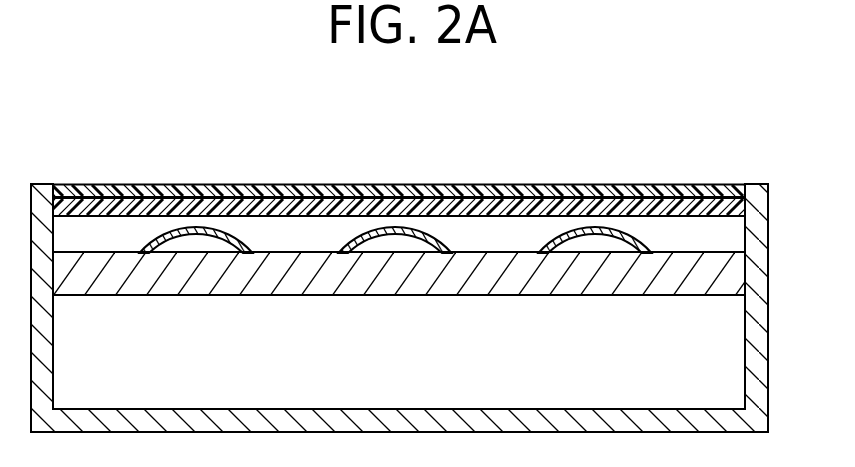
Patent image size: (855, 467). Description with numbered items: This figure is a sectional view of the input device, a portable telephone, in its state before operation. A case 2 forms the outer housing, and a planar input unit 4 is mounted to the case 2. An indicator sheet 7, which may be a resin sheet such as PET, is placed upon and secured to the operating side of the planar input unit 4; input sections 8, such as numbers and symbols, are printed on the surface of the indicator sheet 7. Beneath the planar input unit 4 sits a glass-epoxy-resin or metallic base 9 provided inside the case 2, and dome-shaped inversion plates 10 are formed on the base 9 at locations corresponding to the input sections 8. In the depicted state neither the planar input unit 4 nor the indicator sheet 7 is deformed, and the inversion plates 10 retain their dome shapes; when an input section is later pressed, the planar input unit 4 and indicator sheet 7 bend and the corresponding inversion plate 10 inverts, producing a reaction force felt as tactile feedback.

The case 2 is at (758, 353).
The planar input unit 4 is at (737, 205).
The indicator sheet 7 is at (399, 153).
The input sections 8 is at (104, 192).
The base 9 is at (737, 262).
The inversion plates 10 is at (186, 226).